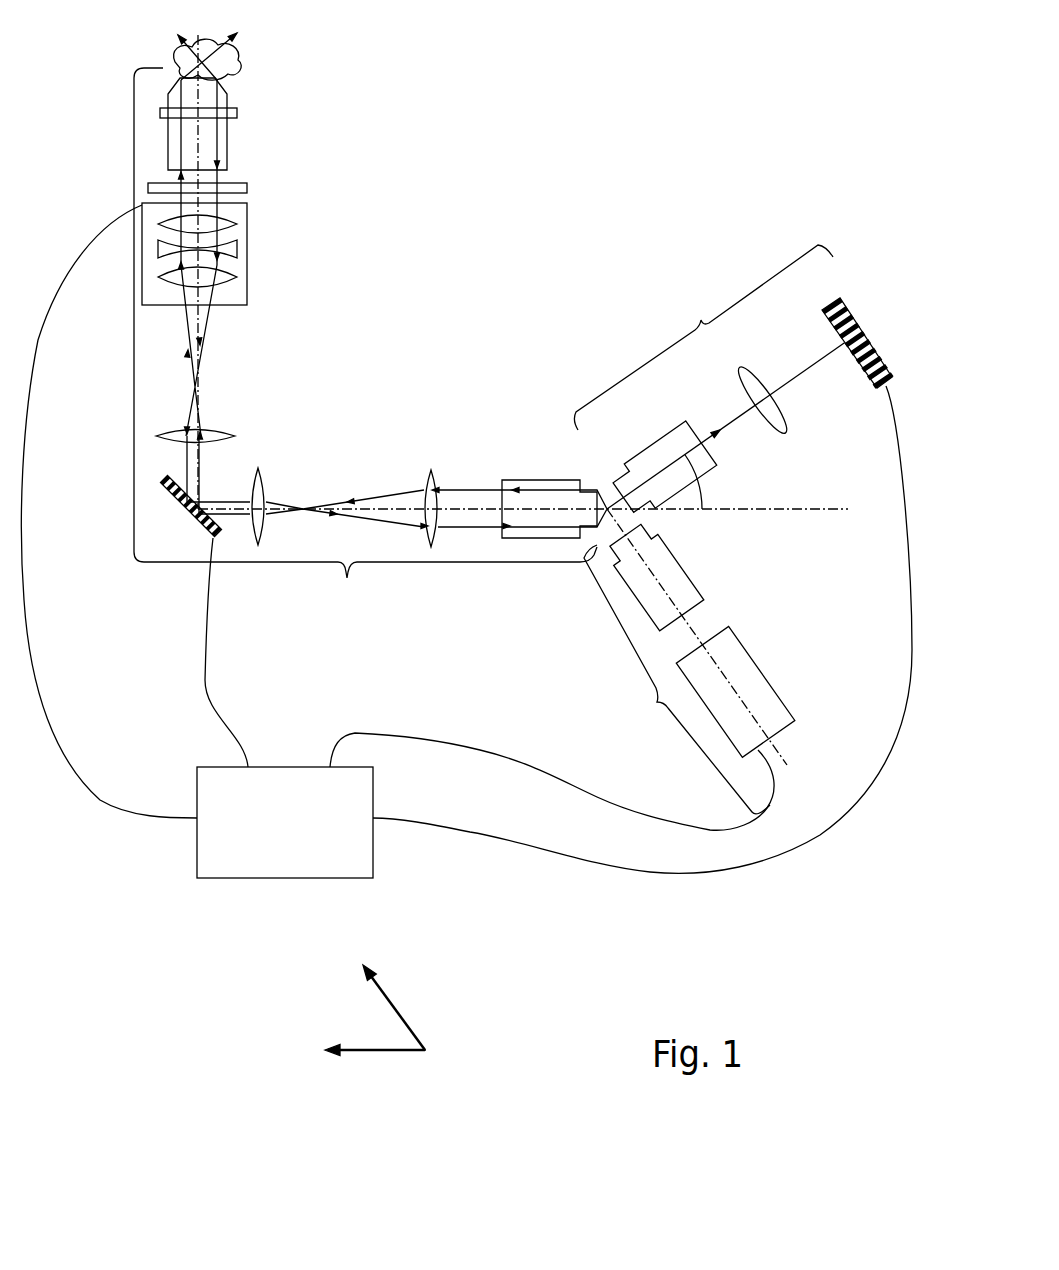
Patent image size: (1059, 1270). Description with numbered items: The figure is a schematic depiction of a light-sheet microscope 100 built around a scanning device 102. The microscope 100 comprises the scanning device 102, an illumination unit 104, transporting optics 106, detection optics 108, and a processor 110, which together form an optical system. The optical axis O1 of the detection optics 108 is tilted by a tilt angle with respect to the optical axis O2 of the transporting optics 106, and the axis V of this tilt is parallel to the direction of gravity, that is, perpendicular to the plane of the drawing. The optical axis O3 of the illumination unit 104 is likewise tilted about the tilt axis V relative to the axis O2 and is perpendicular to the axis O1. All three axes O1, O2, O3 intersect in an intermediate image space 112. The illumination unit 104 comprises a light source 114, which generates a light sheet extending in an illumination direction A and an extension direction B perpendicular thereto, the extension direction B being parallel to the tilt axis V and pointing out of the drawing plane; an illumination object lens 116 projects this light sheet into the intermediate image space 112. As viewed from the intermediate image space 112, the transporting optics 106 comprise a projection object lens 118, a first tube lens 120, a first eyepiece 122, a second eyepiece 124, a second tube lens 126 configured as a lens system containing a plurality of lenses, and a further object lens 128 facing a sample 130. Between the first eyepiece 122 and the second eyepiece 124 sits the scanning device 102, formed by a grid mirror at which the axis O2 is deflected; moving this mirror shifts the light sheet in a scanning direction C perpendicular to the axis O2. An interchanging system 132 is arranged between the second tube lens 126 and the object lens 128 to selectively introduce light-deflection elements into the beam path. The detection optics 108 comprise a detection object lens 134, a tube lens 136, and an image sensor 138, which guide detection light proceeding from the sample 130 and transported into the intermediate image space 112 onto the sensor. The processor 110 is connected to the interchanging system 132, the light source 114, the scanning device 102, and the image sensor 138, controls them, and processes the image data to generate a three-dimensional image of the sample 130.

The light-sheet microscope 100 is at (508, 172).
The scanning device 102 is at (188, 495).
The illumination unit 104 is at (657, 703).
The transporting optics 106 is at (347, 580).
The detection optics 108 is at (700, 318).
The processor 110 is at (285, 822).
The intermediate image space 112 is at (600, 465).
The light source 114 is at (750, 657).
The illumination object lens 116 is at (687, 577).
The projection object lens 118 is at (512, 480).
The first tube lens 120 is at (431, 470).
The first eyepiece 122 is at (265, 480).
The second eyepiece 124 is at (227, 430).
The second tube lens 126 is at (248, 263).
The object lens 128 is at (230, 142).
The sample 130 is at (240, 72).
The interchanging system 132 is at (247, 190).
The detection object lens 134 is at (717, 465).
The tube lens 136 is at (750, 400).
The image sensor 138 is at (828, 318).
The optical axis of the detection optics O1 is at (797, 383).
The optical axis of the transporting optics O2 is at (198, 333).
The optical axis of the illumination unit O3 is at (692, 628).
The tilt axis V is at (607, 509).
The illumination direction A is at (388, 992).
The extension direction B is at (430, 1048).
The scanning direction C is at (357, 1053).